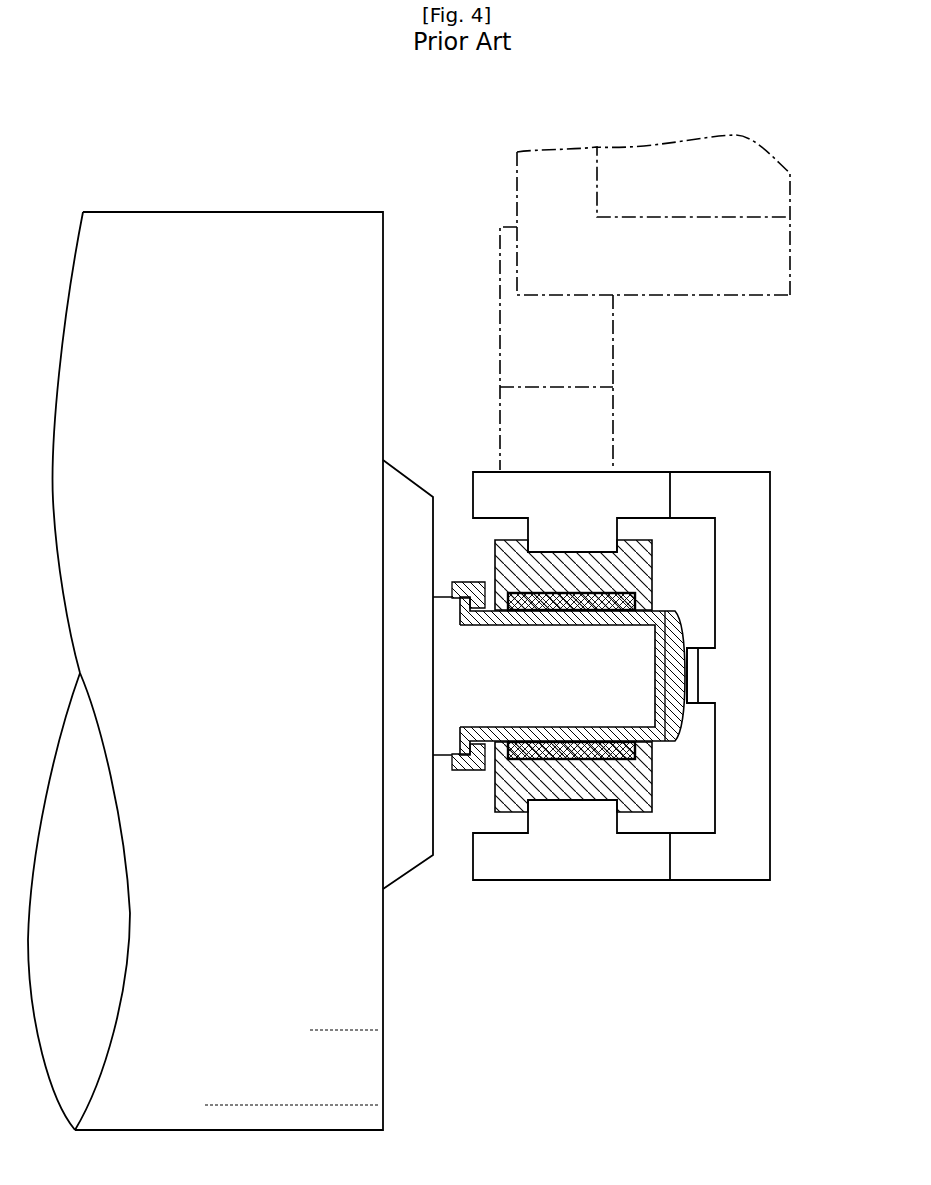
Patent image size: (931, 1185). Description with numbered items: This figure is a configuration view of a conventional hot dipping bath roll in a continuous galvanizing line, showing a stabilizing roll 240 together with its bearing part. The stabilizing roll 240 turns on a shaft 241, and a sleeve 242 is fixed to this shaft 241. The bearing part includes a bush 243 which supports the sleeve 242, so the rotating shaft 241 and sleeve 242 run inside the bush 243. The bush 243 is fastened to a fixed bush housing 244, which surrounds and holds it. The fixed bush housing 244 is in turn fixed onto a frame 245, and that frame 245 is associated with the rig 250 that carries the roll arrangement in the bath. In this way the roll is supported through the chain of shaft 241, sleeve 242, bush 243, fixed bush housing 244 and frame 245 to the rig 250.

The stabilizing roll 240 is at (205, 165).
The shaft 241 is at (550, 698).
The sleeve 242 is at (698, 672).
The bush 243 is at (590, 742).
The fixed bush housing 244 is at (642, 817).
The frame 245 is at (760, 497).
The rig 250 is at (622, 360).